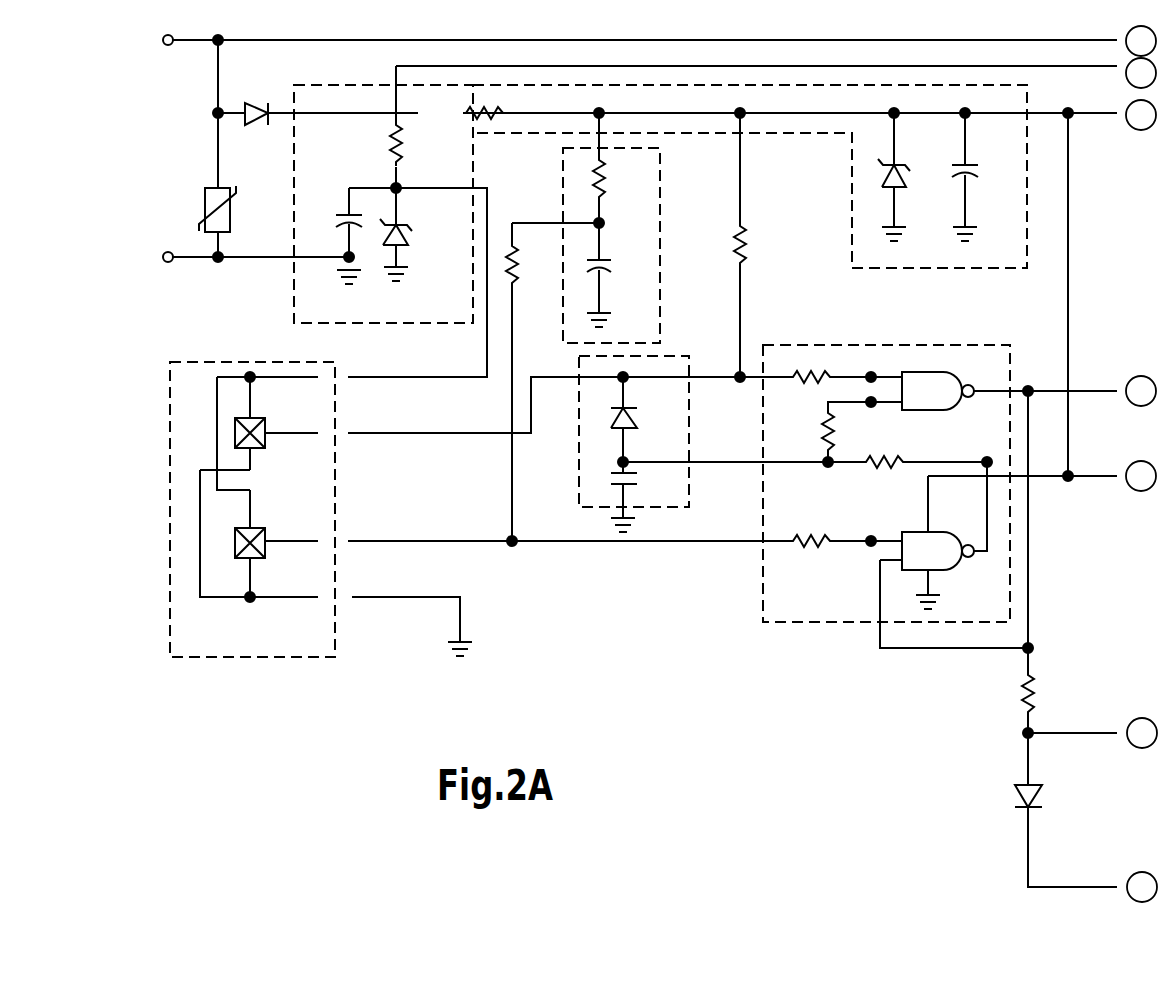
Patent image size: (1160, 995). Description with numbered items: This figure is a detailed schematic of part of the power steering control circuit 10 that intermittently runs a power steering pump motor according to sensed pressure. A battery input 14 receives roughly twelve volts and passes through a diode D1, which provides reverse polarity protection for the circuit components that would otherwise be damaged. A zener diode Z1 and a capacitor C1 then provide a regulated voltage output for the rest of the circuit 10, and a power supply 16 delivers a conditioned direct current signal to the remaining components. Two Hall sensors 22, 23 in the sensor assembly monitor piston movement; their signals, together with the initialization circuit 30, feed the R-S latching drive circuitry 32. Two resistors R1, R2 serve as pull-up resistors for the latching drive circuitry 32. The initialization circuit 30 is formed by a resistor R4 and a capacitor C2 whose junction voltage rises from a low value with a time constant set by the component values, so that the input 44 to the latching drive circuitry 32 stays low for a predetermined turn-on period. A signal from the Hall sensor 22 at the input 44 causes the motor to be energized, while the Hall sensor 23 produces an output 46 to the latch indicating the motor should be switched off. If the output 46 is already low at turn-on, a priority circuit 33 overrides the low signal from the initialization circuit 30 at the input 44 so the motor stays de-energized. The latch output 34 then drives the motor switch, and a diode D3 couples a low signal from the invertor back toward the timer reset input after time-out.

The power steering control circuit 10 is at (602, 464).
The battery input 14 is at (188, 44).
The power supply 16 is at (770, 135).
The Hall sensor 22 is at (260, 532).
The Hall sensor 23 is at (258, 420).
The initialization circuit 30 is at (649, 220).
The R-S latching drive circuitry 32 is at (813, 621).
The priority circuit 33 is at (613, 487).
The output 34 is at (1088, 391).
The input 44 is at (628, 537).
The output 46 is at (405, 433).
The diode D1 is at (252, 123).
The capacitor C1 is at (340, 214).
The zener diode Z1 is at (404, 242).
The resistor R1 is at (552, 382).
The resistor R4 is at (617, 168).
The capacitor C2 is at (614, 275).
The resistor R2 is at (757, 245).
The diode D3 is at (1014, 794).